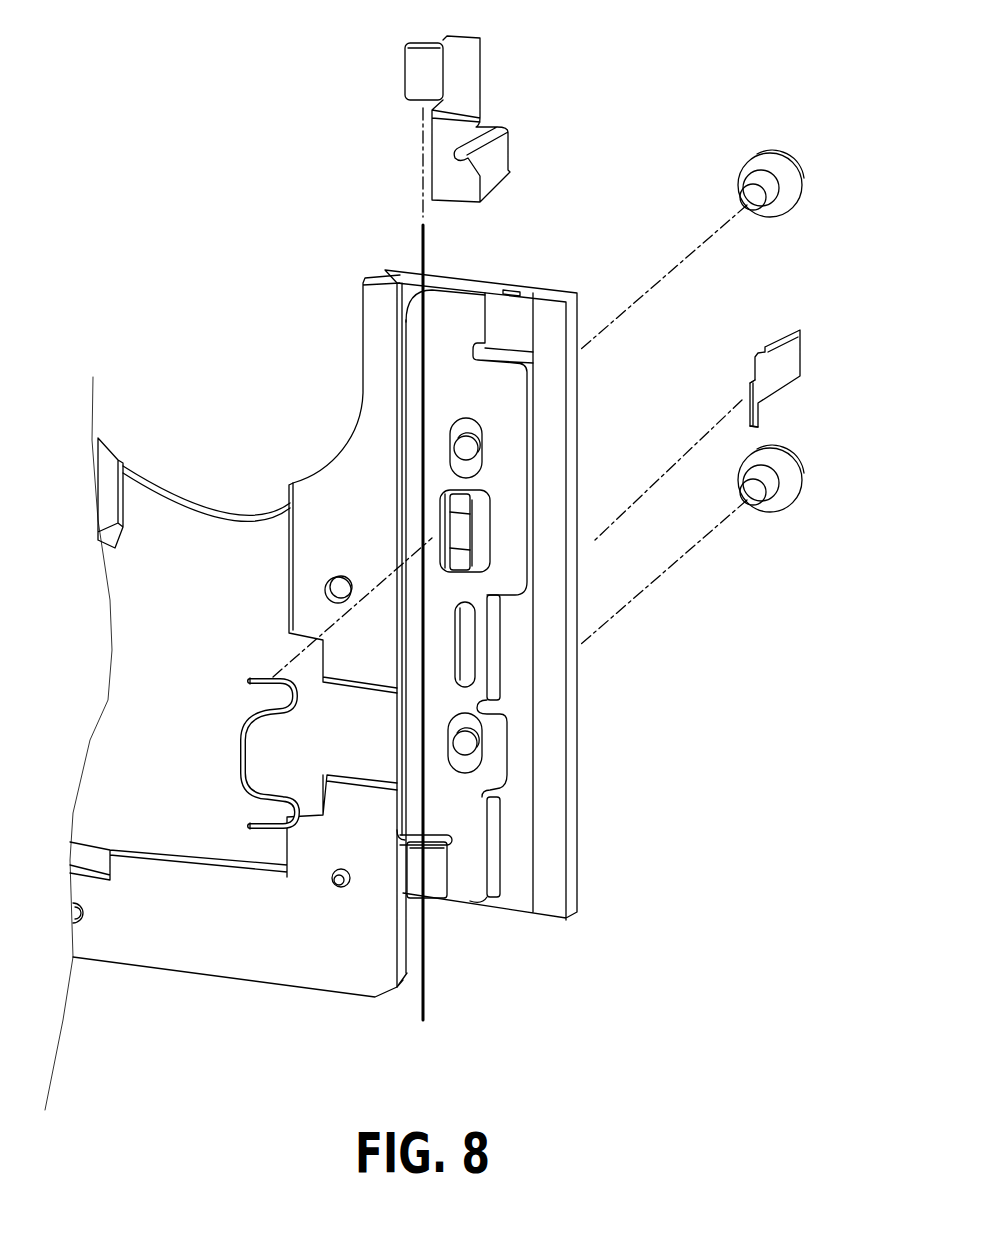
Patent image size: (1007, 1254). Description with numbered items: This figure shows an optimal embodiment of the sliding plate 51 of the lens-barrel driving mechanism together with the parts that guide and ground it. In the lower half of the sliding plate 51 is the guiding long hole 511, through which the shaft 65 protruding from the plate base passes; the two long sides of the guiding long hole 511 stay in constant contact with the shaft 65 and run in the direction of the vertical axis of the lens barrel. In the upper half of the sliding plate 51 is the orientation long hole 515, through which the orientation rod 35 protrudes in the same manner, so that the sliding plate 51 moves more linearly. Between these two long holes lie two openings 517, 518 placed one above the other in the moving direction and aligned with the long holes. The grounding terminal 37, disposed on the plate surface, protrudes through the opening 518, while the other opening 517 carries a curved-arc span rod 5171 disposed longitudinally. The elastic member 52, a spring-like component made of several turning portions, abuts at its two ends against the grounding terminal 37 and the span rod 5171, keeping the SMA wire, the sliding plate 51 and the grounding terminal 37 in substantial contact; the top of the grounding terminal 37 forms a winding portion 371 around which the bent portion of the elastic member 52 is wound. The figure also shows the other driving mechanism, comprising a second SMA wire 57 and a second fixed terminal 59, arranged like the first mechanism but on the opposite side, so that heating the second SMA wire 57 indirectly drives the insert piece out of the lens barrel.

The orientation rod 35 is at (793, 187).
The grounding terminal 37 is at (795, 360).
The winding portion 371 is at (755, 395).
The sliding plate 51 is at (395, 283).
The guiding long hole 511 is at (482, 763).
The orientation long hole 515 is at (455, 432).
The opening 517 is at (480, 537).
The span rod 5171 is at (467, 508).
The opening 518 is at (475, 652).
The elastic member 52 is at (238, 752).
The second SMA wire 57 is at (425, 975).
The second fixed terminal 59 is at (475, 93).
The shaft 65 is at (793, 480).